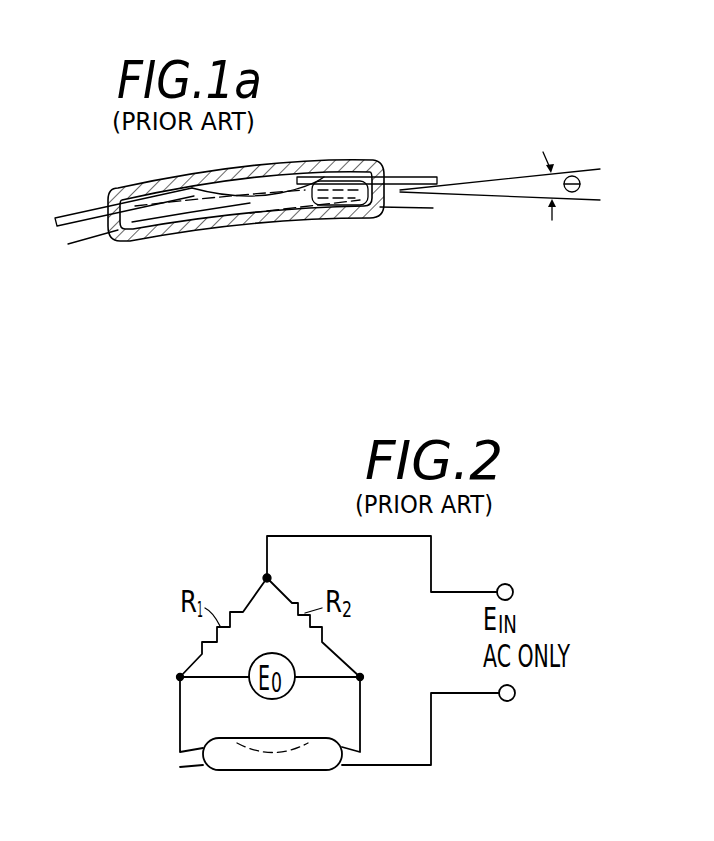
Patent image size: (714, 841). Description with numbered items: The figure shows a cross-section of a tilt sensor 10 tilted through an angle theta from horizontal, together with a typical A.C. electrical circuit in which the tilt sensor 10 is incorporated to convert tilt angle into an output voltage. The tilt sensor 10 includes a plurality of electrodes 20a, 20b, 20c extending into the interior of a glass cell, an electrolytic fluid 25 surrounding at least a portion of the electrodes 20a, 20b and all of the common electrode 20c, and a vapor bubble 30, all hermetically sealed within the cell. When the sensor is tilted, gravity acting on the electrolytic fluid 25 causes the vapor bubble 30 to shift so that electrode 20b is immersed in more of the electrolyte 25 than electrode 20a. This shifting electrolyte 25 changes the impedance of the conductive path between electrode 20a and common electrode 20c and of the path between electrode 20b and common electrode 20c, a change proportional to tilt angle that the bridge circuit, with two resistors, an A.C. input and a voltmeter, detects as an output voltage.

In FIG. 2, the tilt sensor 10 is at (141, 772).
In FIG. 1A, the electrode 20a is at (403, 177).
In FIG. 1A, the electrode 20b is at (84, 207).
In FIG. 1A, the common electrode 20c is at (90, 240).
In FIG. 1A, the electrolytic fluid 25 is at (315, 197).
In FIG. 1A, the vapor bubble 30 is at (266, 186).